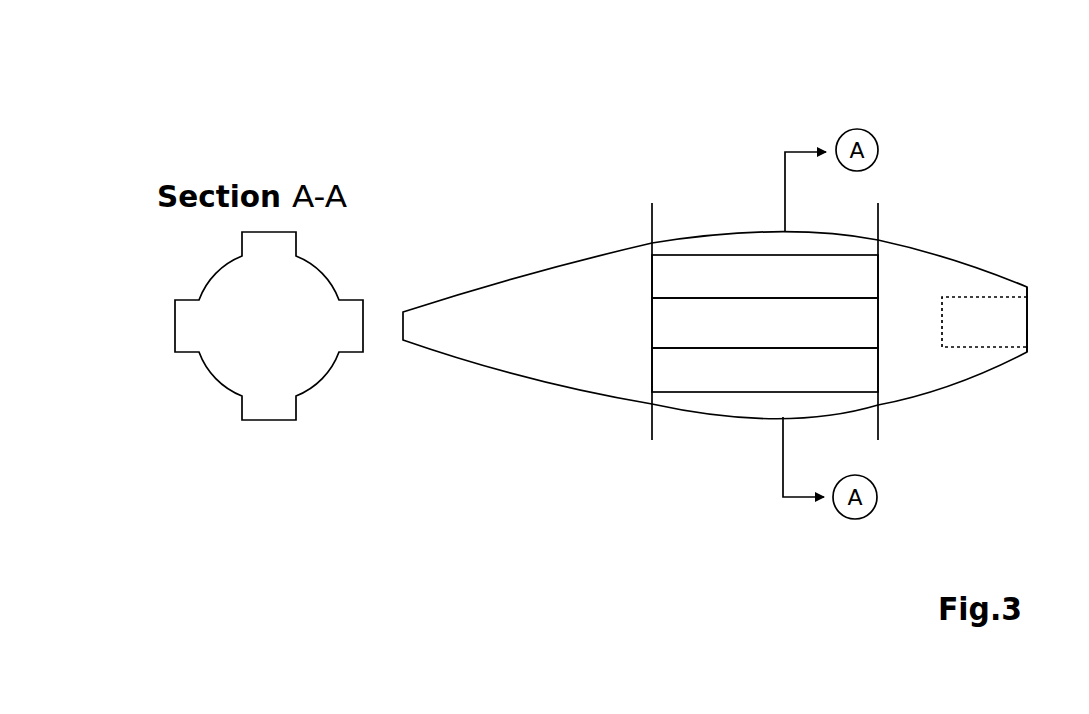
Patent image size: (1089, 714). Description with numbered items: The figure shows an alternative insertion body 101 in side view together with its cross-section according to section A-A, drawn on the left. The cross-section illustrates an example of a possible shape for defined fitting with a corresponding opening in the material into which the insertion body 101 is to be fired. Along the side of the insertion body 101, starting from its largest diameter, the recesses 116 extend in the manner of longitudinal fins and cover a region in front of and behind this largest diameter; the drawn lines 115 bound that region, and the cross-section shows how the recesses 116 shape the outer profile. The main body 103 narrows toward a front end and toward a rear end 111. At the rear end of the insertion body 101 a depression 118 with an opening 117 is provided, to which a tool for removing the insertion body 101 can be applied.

The insertion body 101 is at (888, 79).
The tool body 103 is at (403, 312).
The tip end 111 is at (1028, 288).
The section boundary lines 115 is at (651, 216).
The recesses 116 is at (667, 337).
The opening 117 is at (1030, 322).
The depression 118 is at (996, 346).